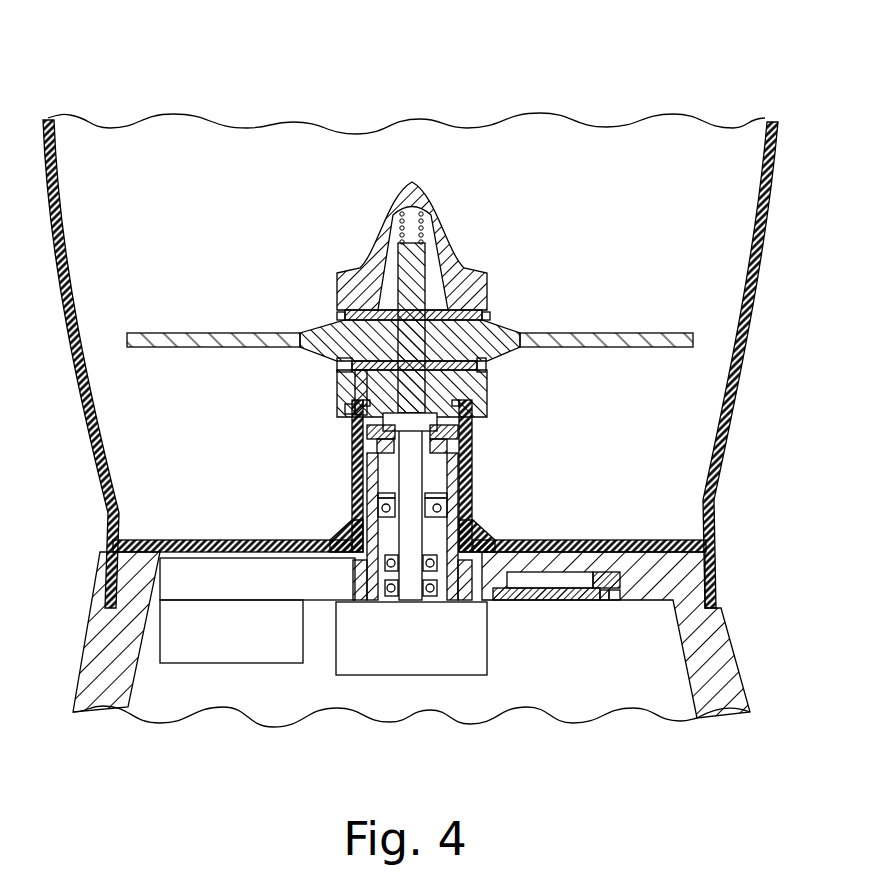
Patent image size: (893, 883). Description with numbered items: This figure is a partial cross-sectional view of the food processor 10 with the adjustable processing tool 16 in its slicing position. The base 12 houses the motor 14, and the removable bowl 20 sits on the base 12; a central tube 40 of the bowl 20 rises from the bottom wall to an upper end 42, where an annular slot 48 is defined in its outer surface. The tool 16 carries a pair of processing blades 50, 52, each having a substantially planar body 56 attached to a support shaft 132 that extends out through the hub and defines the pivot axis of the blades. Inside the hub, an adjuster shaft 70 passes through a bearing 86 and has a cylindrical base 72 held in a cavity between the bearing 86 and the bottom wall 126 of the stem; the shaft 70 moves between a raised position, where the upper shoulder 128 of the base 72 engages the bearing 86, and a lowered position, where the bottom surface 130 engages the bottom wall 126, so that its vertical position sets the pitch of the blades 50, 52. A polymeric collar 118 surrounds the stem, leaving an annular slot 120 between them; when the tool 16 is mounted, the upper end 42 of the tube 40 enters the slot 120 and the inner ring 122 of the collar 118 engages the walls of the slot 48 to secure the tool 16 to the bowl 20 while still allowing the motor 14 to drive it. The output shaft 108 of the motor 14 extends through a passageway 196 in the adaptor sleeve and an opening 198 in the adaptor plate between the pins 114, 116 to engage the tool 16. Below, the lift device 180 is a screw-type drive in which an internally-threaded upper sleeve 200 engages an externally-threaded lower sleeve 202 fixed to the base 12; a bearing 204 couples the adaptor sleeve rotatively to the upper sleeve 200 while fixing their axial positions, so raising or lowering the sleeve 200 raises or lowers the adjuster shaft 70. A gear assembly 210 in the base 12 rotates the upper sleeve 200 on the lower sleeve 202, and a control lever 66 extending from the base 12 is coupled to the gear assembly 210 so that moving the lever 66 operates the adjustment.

The food processor 10 is at (122, 98).
The base 12 is at (727, 643).
The motor 14 is at (480, 660).
The adjustable processing tool 16 is at (549, 210).
The bowl 20 is at (718, 468).
The central tube 40 is at (473, 480).
The upper end 42 is at (497, 400).
The annular slot 48 is at (505, 398).
The processing blade 50 is at (626, 352).
The processing blade 52 is at (198, 357).
The planar body 56 is at (217, 332).
The control lever 66 is at (183, 653).
The adjuster shaft 70 is at (415, 268).
The cylindrical base 72 is at (352, 377).
The bearing 86 is at (487, 312).
The output shaft 108 is at (410, 525).
The pin 114 is at (473, 423).
The pin 116 is at (375, 432).
The collar 118 is at (337, 390).
The annular slot 120 is at (478, 435).
The inner ring 122 is at (490, 414).
The bottom wall 126 is at (352, 408).
The upper shoulder 128 is at (353, 349).
The bottom surface 130 is at (405, 425).
The support shaft 132 is at (497, 337).
The lift device 180 is at (533, 613).
The passageway 196 is at (352, 503).
The opening 198 is at (473, 465).
The upper sleeve 200 is at (490, 537).
The lower sleeve 202 is at (463, 582).
The bearing 204 is at (473, 497).
The gear assembly 210 is at (318, 594).